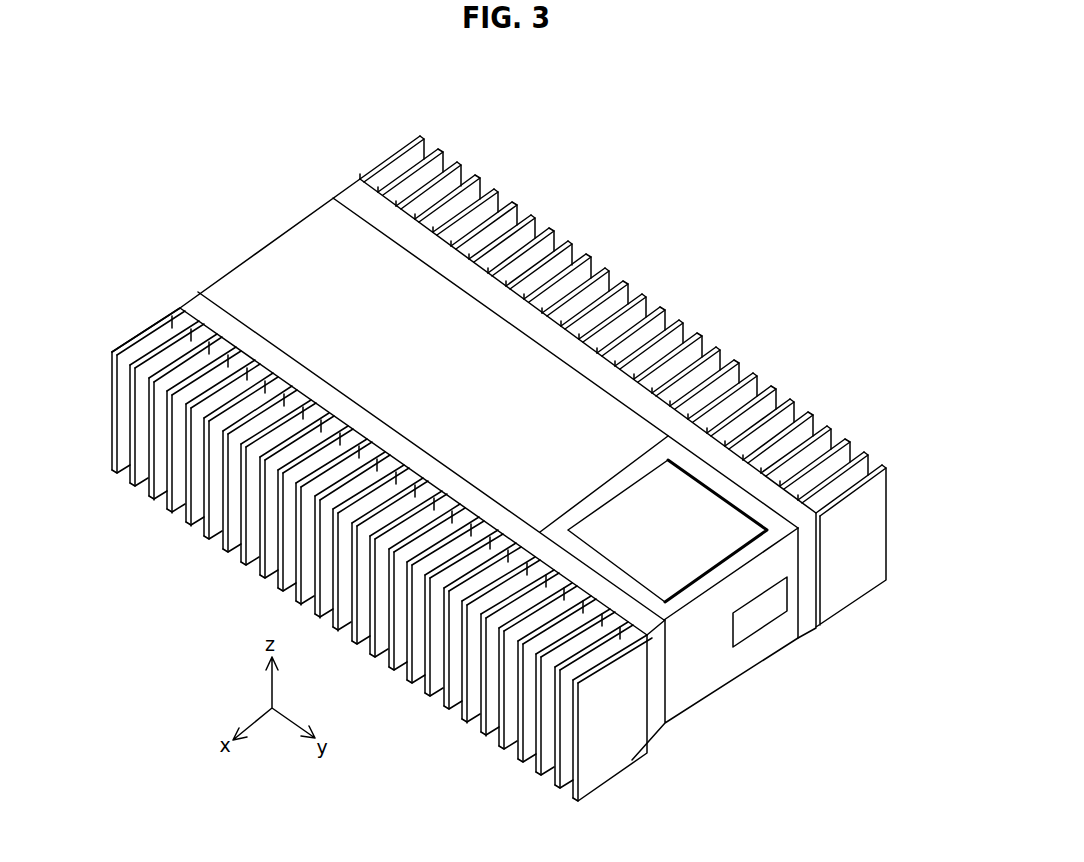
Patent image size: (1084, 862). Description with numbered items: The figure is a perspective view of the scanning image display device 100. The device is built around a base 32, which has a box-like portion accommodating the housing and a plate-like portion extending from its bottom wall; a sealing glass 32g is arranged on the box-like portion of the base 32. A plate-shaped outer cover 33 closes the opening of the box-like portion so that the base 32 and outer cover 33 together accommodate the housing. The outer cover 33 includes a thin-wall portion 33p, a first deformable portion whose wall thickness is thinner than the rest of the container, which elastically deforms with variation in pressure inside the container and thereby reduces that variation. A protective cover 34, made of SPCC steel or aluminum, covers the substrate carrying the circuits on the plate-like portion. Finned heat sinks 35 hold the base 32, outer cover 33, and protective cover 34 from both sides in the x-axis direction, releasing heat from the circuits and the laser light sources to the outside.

The scanning image display device 100 is at (702, 203).
The base 32 is at (683, 702).
The sealing glass 32g is at (766, 612).
The outer cover 33 is at (792, 543).
The thin-wall portion 33p is at (640, 518).
The protective cover 34 is at (293, 261).
The heat sink 35 is at (390, 154).